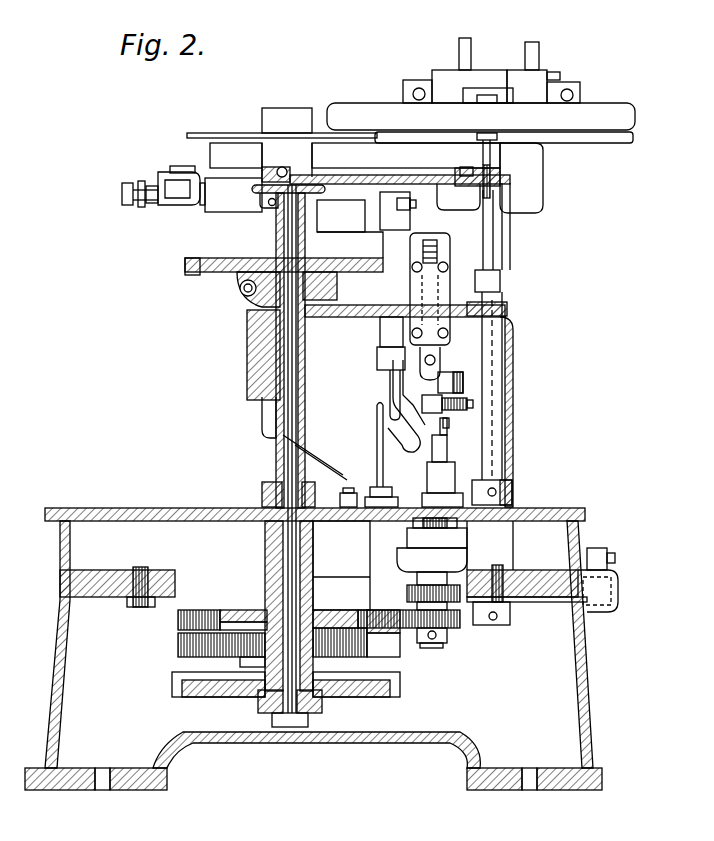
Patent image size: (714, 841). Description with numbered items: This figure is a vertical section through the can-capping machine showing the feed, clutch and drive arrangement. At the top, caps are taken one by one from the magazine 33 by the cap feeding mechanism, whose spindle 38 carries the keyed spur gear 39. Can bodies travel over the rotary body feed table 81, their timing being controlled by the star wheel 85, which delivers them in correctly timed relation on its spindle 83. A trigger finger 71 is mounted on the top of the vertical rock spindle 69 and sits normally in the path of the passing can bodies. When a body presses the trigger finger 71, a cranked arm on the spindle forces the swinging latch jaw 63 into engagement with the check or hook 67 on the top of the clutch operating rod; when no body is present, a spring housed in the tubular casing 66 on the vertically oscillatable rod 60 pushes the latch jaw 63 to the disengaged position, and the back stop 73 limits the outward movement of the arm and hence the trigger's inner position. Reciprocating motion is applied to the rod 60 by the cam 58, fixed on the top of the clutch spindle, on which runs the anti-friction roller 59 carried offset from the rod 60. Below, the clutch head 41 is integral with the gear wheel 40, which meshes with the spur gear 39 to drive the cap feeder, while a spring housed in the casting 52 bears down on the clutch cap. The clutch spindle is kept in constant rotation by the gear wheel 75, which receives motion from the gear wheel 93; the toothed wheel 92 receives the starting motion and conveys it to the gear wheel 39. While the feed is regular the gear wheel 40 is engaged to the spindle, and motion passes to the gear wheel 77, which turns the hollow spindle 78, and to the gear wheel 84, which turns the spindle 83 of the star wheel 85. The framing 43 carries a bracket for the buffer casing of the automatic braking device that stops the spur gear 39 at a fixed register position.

The magazine 33 is at (538, 46).
The trigger finger 71 is at (355, 171).
The star wheel 85 is at (252, 188).
The body feed table 81 is at (224, 260).
The vertical rock spindle 69 is at (382, 336).
The vertically oscillatable rod 60 is at (441, 349).
The anti-friction roller 59 is at (441, 362).
The spindle 38 is at (508, 361).
The cam 58 is at (463, 383).
The tubular casing 66 is at (472, 402).
The framing 43 is at (446, 422).
The check or hook 67 is at (447, 440).
The swinging latch jaw 63 is at (417, 432).
The back stop 73 is at (377, 460).
The spindle of the star wheel 83 is at (283, 458).
The casting 52 is at (442, 484).
The hollow spindle 78 is at (275, 537).
The clutch head 41 is at (432, 545).
The gear wheel 40 is at (408, 592).
The spur gear 39 is at (516, 599).
The gear wheel 93 is at (178, 619).
The toothed wheel 92 is at (178, 645).
The gear wheel 77 is at (330, 618).
The gear wheel 75 is at (453, 628).
The gear wheel 84 is at (347, 690).